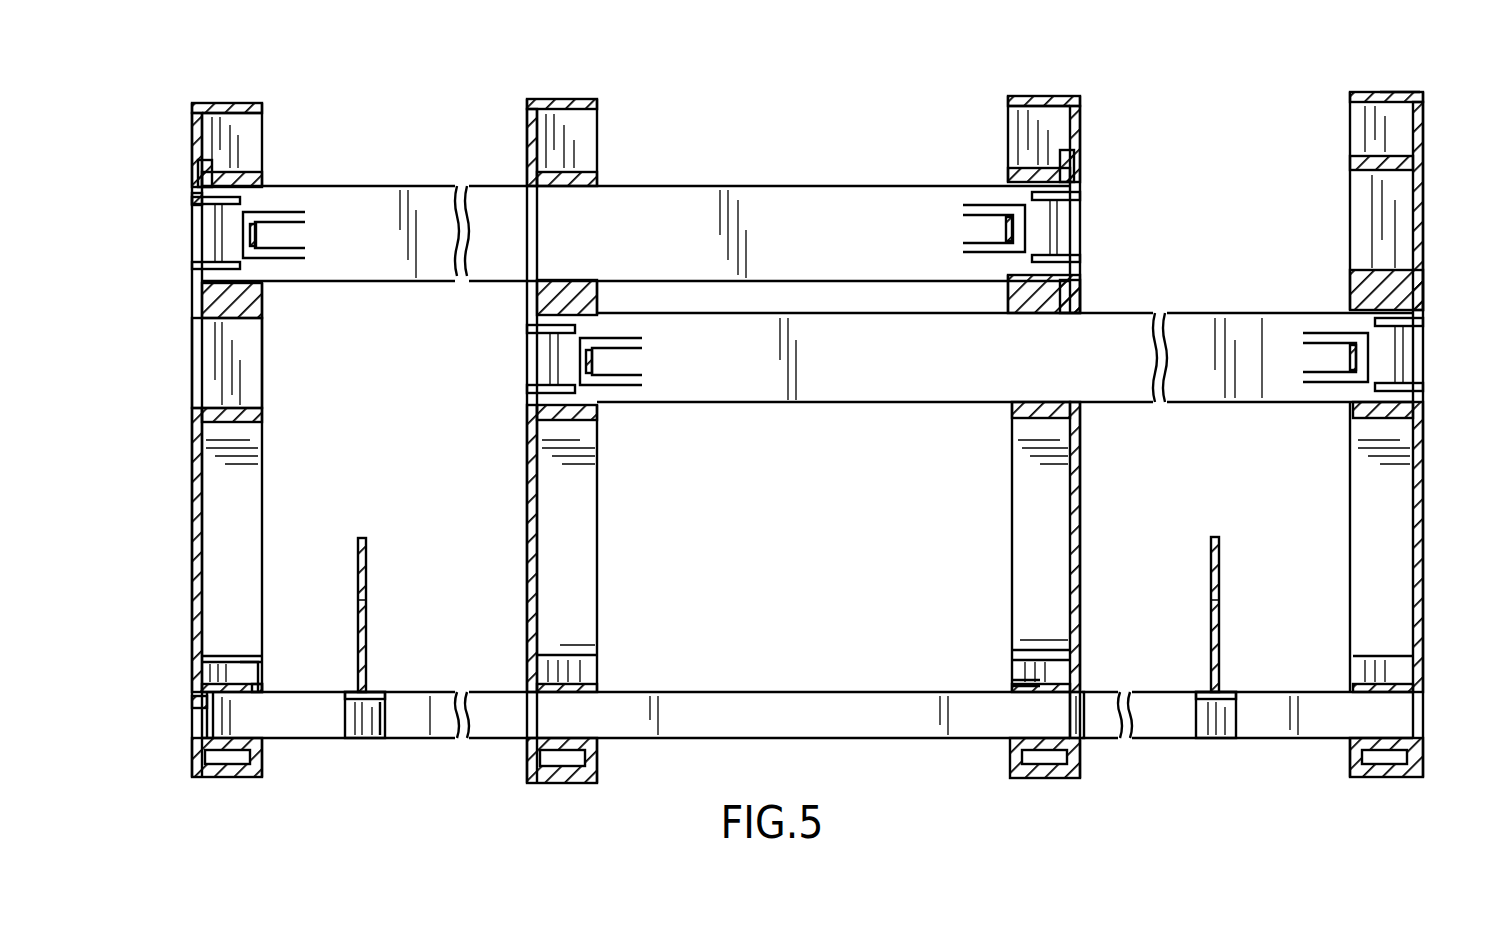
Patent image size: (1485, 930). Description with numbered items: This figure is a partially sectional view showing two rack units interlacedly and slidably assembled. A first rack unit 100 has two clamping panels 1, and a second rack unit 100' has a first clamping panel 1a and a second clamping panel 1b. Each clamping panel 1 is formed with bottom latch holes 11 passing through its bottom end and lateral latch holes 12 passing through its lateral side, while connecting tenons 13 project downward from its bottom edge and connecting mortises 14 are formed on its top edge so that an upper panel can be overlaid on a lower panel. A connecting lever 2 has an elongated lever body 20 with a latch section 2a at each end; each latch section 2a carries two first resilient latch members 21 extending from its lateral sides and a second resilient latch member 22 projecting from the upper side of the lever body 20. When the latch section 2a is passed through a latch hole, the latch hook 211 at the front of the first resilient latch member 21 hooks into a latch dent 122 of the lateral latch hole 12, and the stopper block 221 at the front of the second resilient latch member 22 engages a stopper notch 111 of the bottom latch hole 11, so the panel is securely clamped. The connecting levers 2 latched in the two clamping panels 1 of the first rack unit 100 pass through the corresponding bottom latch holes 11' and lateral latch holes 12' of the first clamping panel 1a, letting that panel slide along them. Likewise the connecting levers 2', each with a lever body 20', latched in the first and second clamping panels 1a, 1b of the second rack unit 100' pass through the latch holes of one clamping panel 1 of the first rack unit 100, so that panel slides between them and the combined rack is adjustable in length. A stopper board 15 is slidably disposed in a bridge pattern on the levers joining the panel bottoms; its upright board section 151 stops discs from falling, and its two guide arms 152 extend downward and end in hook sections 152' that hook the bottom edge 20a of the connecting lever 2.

The clamping panel 1 is at (1076, 122).
The first clamping panel 1a is at (563, 98).
The second clamping panel 1b is at (1424, 205).
The connecting lever 2 is at (636, 429).
The connecting lever 2' is at (1005, 525).
The latch section 2a is at (200, 238).
The bottom latch hole 11 is at (776, 550).
The bottom latch hole 11' is at (598, 720).
The lateral latch hole 12 is at (636, 394).
The lateral latch hole 12' is at (975, 392).
The connecting tenon 13 is at (230, 780).
The connecting mortise 14 is at (223, 103).
The stopper board 15 is at (367, 578).
The lever body 20 is at (831, 421).
The lever body 20' is at (1289, 738).
The bottom edge 20a is at (425, 724).
The first resilient latch member 21 is at (200, 135).
The second resilient latch member 22 is at (285, 240).
The first rack unit 100 is at (257, 410).
The second rack unit 100' is at (1369, 61).
The stopper notch 111 is at (255, 690).
The latch dent 122 is at (200, 180).
The upright board section 151 is at (367, 640).
The guide arm 152 is at (790, 749).
The hook section 152' is at (422, 756).
The latch hook 211 is at (192, 197).
The stopper block 221 is at (260, 235).